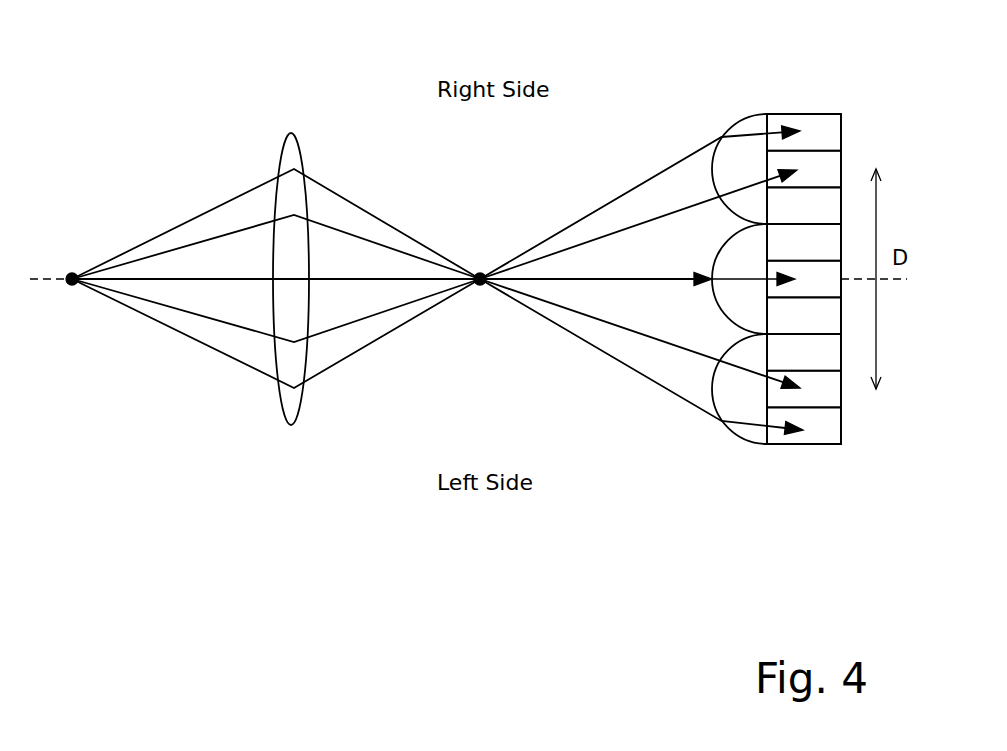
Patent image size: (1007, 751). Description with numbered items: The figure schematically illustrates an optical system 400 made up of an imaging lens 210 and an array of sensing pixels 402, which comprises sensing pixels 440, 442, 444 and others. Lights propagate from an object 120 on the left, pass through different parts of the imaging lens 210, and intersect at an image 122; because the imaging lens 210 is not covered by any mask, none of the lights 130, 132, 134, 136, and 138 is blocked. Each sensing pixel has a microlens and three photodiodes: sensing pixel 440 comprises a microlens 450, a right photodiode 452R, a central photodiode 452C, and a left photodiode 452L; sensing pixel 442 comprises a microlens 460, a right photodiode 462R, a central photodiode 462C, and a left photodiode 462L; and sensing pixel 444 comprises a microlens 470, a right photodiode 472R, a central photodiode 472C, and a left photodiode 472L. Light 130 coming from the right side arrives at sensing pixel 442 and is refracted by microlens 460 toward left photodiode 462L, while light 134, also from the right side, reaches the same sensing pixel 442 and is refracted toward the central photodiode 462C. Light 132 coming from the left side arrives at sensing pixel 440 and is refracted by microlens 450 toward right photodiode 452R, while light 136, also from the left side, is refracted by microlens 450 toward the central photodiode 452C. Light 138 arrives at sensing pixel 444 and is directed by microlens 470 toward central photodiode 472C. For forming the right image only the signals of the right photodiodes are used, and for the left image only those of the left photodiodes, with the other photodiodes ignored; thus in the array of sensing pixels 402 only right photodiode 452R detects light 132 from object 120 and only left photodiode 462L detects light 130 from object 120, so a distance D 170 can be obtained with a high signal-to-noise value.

The object 120 is at (62, 275).
The image 122 is at (483, 285).
The light 130 is at (197, 215).
The light 132 is at (207, 348).
The light 134 is at (257, 227).
The light 136 is at (257, 332).
The light 138 is at (332, 278).
The distance D 170 is at (877, 223).
The imaging lens 210 is at (290, 133).
The optical system 400 is at (206, 41).
The array of sensing pixels 402 is at (762, 69).
The sensing pixel 440 is at (836, 95).
The sensing pixel 442 is at (836, 463).
The sensing pixel 444 is at (703, 277).
The microlens 450 is at (733, 121).
The right photodiode 452R is at (842, 122).
The central photodiode 452C is at (842, 167).
The left photodiode 452L is at (832, 219).
The microlens 460 is at (743, 438).
The right photodiode 462R is at (832, 364).
The central photodiode 462C is at (842, 388).
The left photodiode 462L is at (842, 435).
The microlens 470 is at (715, 258).
The right photodiode 472R is at (832, 256).
The central photodiode 472C is at (777, 288).
The left photodiode 472L is at (832, 327).